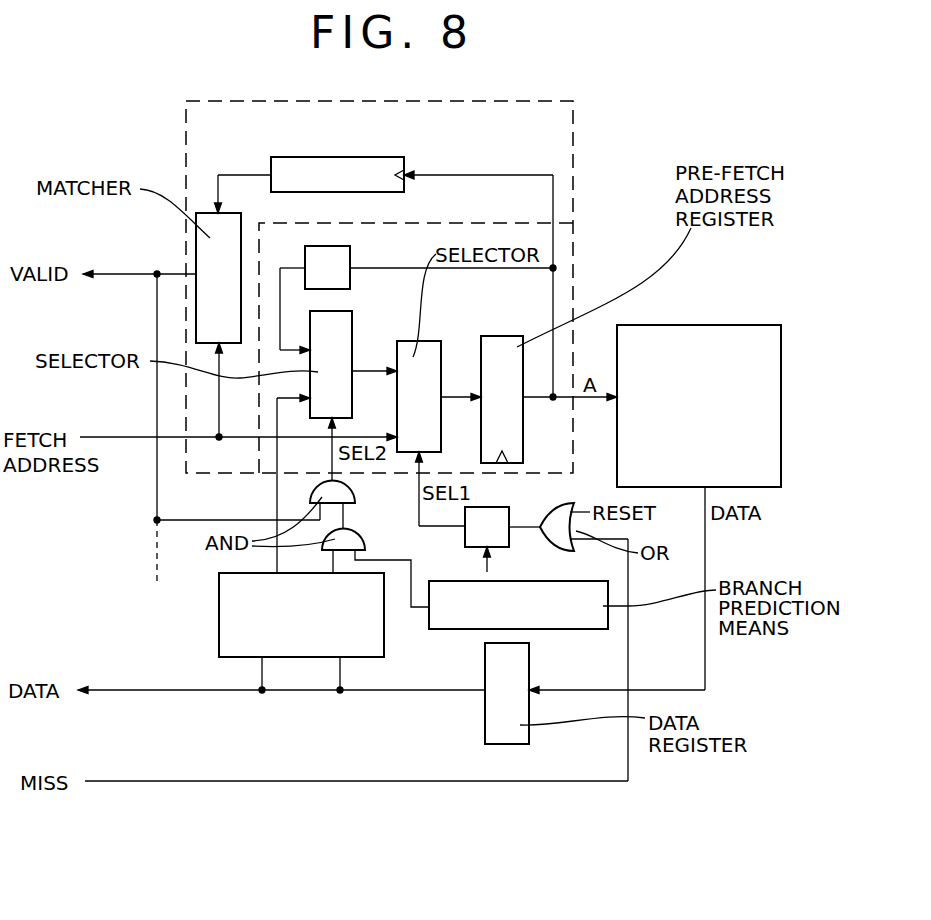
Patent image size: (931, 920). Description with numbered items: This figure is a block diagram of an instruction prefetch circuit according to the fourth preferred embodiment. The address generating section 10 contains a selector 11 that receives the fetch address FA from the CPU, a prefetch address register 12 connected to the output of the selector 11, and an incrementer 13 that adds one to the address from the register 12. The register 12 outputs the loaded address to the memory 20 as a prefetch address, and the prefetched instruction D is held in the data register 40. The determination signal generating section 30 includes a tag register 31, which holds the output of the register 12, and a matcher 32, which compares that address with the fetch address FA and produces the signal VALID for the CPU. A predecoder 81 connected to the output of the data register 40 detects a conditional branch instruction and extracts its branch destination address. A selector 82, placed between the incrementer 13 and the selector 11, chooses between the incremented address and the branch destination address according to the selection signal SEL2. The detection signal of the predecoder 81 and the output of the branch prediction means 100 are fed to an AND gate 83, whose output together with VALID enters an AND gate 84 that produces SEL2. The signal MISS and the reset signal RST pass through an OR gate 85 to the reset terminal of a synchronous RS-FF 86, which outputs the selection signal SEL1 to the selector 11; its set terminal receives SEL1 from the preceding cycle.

The address generating section 10 is at (573, 240).
The selector 11 is at (428, 341).
The prefetch address register 12 is at (500, 336).
The incrementer 13 is at (350, 252).
The memory 20 is at (728, 325).
The determination signal generating section 30 is at (573, 114).
The tag register 31 is at (405, 157).
The matcher 32 is at (240, 213).
The data register 40 is at (529, 650).
The predecoder 81 is at (219, 630).
The selector 82 is at (352, 318).
The AND gate 83 is at (365, 537).
The AND gate 84 is at (355, 492).
The OR gate 85 is at (560, 505).
The synchronous RS-FF 86 is at (468, 545).
The branch prediction means 100 is at (455, 629).